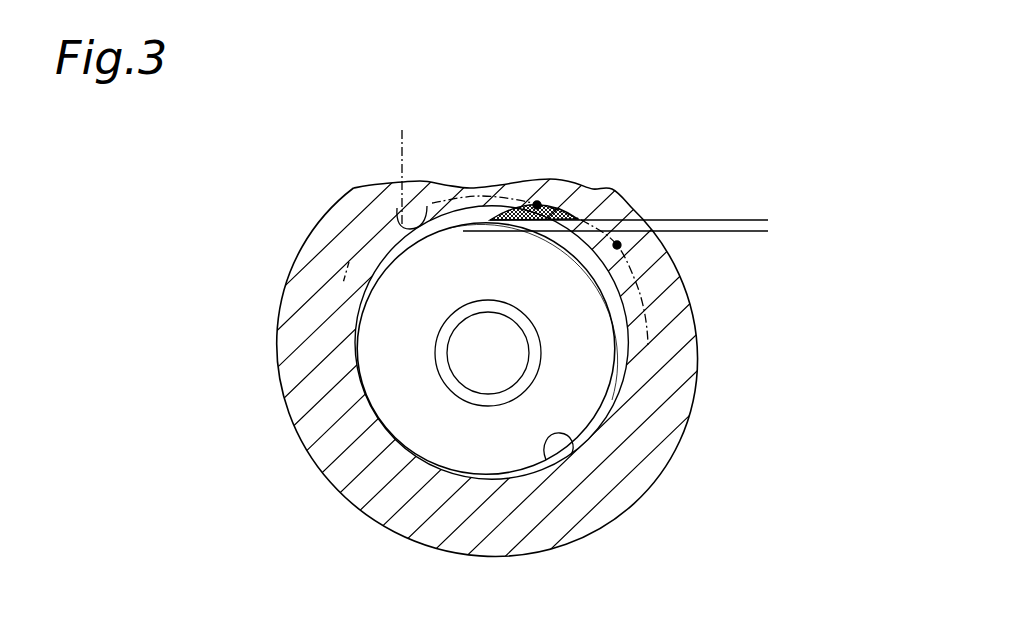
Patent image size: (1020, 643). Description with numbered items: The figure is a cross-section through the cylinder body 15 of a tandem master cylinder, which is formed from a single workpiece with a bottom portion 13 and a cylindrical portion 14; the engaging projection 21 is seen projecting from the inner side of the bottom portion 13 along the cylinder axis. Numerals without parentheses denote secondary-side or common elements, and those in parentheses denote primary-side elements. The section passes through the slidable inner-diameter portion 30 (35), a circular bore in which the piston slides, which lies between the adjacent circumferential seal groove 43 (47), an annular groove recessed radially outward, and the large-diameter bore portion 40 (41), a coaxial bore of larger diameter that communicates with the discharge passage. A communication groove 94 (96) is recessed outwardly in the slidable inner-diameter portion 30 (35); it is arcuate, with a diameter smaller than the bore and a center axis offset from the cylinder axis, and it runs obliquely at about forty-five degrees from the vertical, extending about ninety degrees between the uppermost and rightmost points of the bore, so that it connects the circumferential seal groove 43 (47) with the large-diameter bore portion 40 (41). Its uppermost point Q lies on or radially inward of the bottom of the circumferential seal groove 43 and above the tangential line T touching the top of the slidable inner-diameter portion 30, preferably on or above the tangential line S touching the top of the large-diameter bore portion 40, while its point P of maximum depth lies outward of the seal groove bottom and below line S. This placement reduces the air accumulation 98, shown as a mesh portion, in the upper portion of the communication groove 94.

The bottom portion 13 is at (397, 367).
The cylindrical portion 14 is at (313, 431).
The cylinder body 15 is at (360, 514).
The engaging projection 21 is at (463, 340).
The slidable inner-diameter portion 30 is at (659, 496).
The slidable inner-diameter portion 35 is at (557, 433).
The large-diameter bore portion 40 is at (643, 312).
The large-diameter bore portion 41 is at (596, 318).
The circumferential seal groove 43 is at (429, 164).
The circumferential seal groove 47 is at (429, 164).
The communication groove 94 is at (585, 270).
The communication groove 96 is at (612, 280).
The air accumulation 98 is at (572, 205).
The uppermost point Q is at (536, 202).
The point of maximum depth P is at (619, 246).
The tangential line S is at (768, 220).
The tangential line T is at (768, 231).